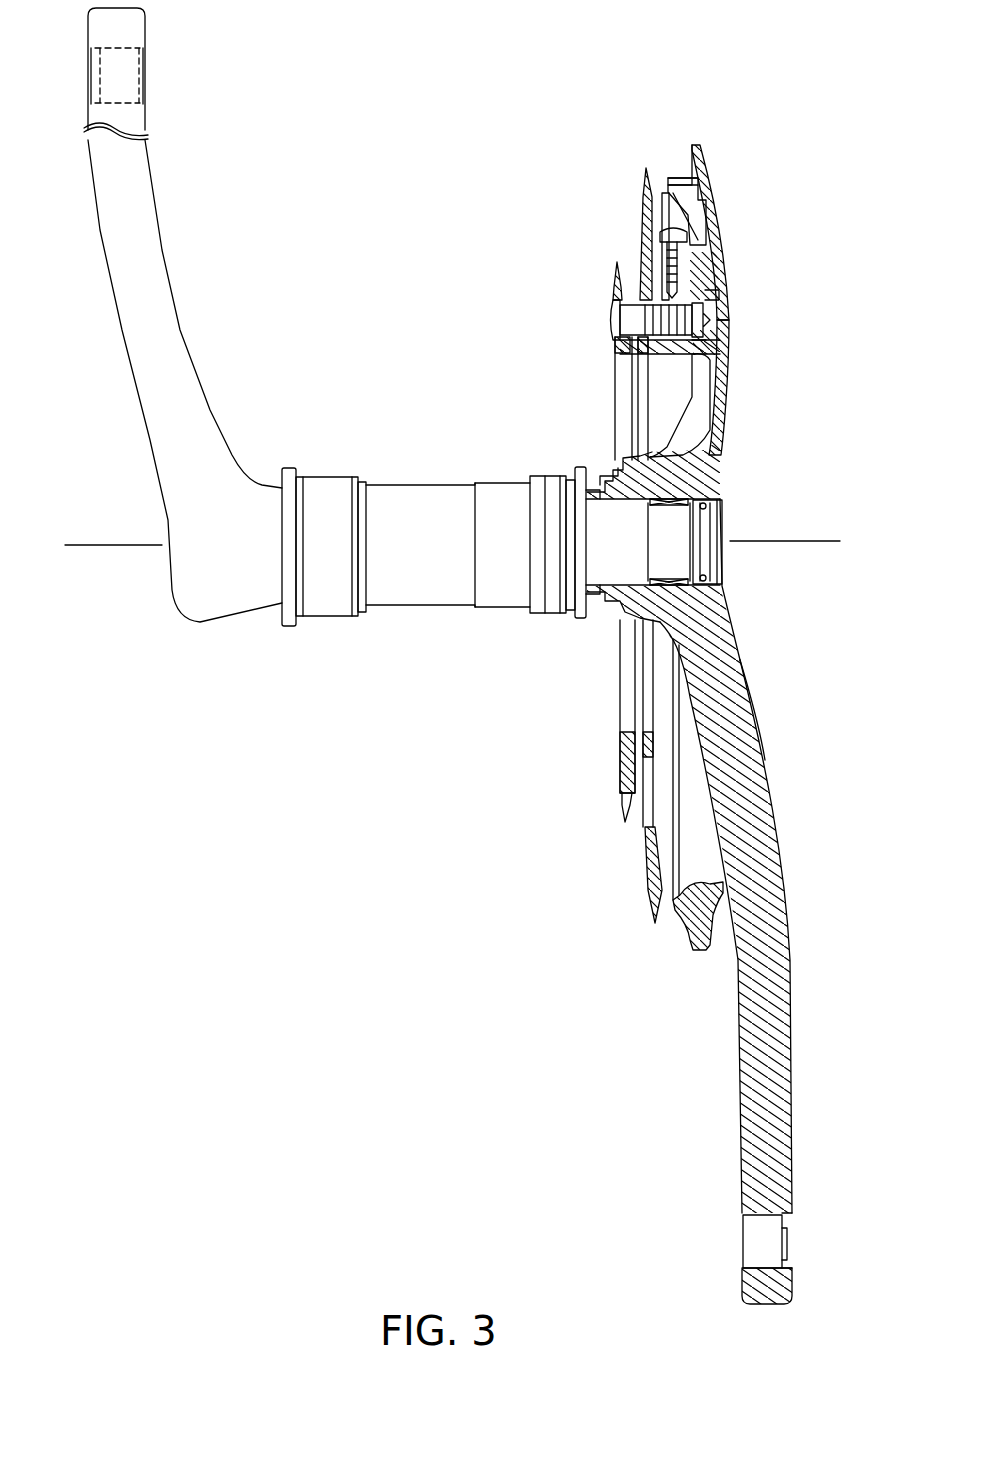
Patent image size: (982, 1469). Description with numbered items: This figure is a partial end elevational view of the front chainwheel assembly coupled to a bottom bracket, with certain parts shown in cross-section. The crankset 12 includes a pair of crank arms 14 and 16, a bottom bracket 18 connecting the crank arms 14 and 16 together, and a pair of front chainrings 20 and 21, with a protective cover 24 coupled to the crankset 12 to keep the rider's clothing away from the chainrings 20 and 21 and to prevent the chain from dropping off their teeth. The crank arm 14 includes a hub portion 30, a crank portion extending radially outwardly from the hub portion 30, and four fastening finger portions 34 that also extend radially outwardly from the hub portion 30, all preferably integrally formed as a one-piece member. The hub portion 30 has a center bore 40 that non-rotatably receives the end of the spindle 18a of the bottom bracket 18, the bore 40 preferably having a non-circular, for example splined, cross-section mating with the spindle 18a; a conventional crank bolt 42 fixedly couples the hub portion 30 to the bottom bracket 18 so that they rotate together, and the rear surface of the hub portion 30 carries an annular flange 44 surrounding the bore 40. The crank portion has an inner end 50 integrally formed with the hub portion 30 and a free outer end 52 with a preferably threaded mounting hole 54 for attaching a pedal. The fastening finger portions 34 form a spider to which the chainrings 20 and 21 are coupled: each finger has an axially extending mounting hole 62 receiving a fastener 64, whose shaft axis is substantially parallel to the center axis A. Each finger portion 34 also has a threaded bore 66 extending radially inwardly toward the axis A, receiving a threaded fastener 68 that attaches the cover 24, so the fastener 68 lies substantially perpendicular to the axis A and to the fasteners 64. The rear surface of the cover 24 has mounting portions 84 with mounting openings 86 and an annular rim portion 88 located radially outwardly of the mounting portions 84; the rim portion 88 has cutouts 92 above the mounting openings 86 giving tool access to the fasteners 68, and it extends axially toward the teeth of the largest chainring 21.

The crankset 12 is at (577, 206).
The crank arm 14 is at (738, 1048).
The crank arm 16 is at (172, 272).
The bottom bracket 18 is at (430, 480).
The spindle 18a is at (668, 566).
The front chainring 20 is at (613, 273).
The front chainring 21 is at (640, 216).
The protective cover 24 is at (726, 186).
The hub portion 30 is at (730, 591).
The fastening finger portion 34 is at (729, 346).
The center bore 40 is at (720, 530).
The crank bolt 42 is at (723, 540).
The annular flange 44 is at (613, 460).
The inner end 50 is at (746, 660).
The free outer end 52 is at (752, 1303).
The mounting hole 54 is at (760, 1266).
The mounting hole 62 is at (672, 351).
The fastener 64 is at (608, 318).
The threaded bore 66 is at (726, 302).
The threaded fastener 68 is at (700, 213).
The mounting portion 84 is at (697, 239).
The mounting opening 86 is at (646, 260).
The rim portion 88 is at (655, 170).
The cutout 92 is at (684, 152).
The center axis A is at (797, 541).